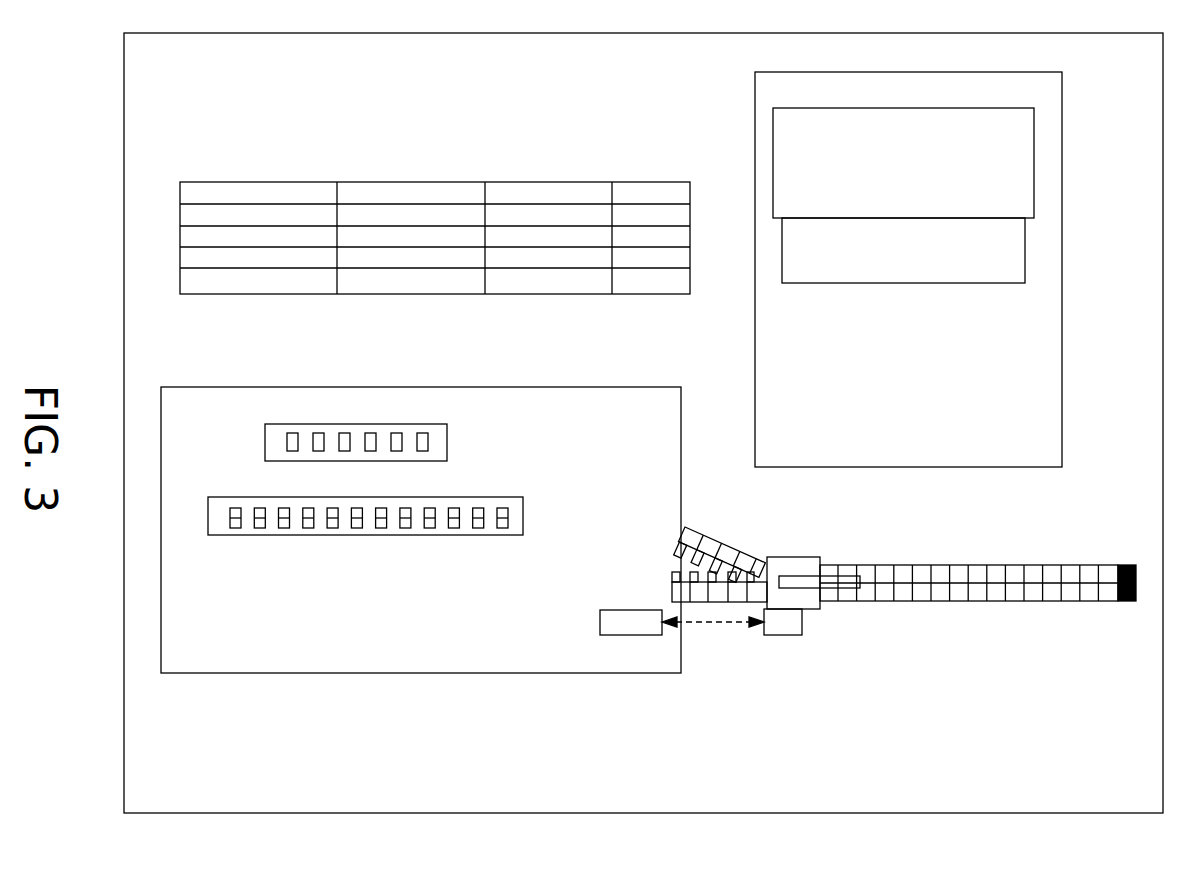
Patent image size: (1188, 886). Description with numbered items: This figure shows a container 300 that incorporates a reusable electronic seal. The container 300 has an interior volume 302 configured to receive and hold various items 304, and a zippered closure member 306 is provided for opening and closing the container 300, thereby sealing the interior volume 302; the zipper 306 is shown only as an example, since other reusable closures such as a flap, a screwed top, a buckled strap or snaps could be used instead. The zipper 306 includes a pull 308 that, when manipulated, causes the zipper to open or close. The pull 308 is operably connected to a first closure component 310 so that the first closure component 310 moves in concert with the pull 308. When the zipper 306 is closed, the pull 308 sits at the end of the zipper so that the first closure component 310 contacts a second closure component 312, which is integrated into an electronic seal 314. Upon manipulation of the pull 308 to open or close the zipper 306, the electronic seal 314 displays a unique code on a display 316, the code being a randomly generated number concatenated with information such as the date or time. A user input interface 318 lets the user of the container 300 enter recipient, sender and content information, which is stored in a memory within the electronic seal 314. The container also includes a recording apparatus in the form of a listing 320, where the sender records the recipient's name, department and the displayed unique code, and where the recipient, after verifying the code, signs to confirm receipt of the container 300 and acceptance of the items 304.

The container 300 is at (1027, 826).
The interior volume 302 is at (1045, 467).
The items 304 is at (987, 283).
The zippered closure member 306 is at (1065, 601).
The pull 308 is at (790, 557).
The first closure component 310 is at (790, 635).
The second closure component 312 is at (625, 635).
The electronic seal 314 is at (623, 673).
The display 316 is at (503, 535).
The user input interface 318 is at (435, 461).
The listing 320 is at (660, 294).